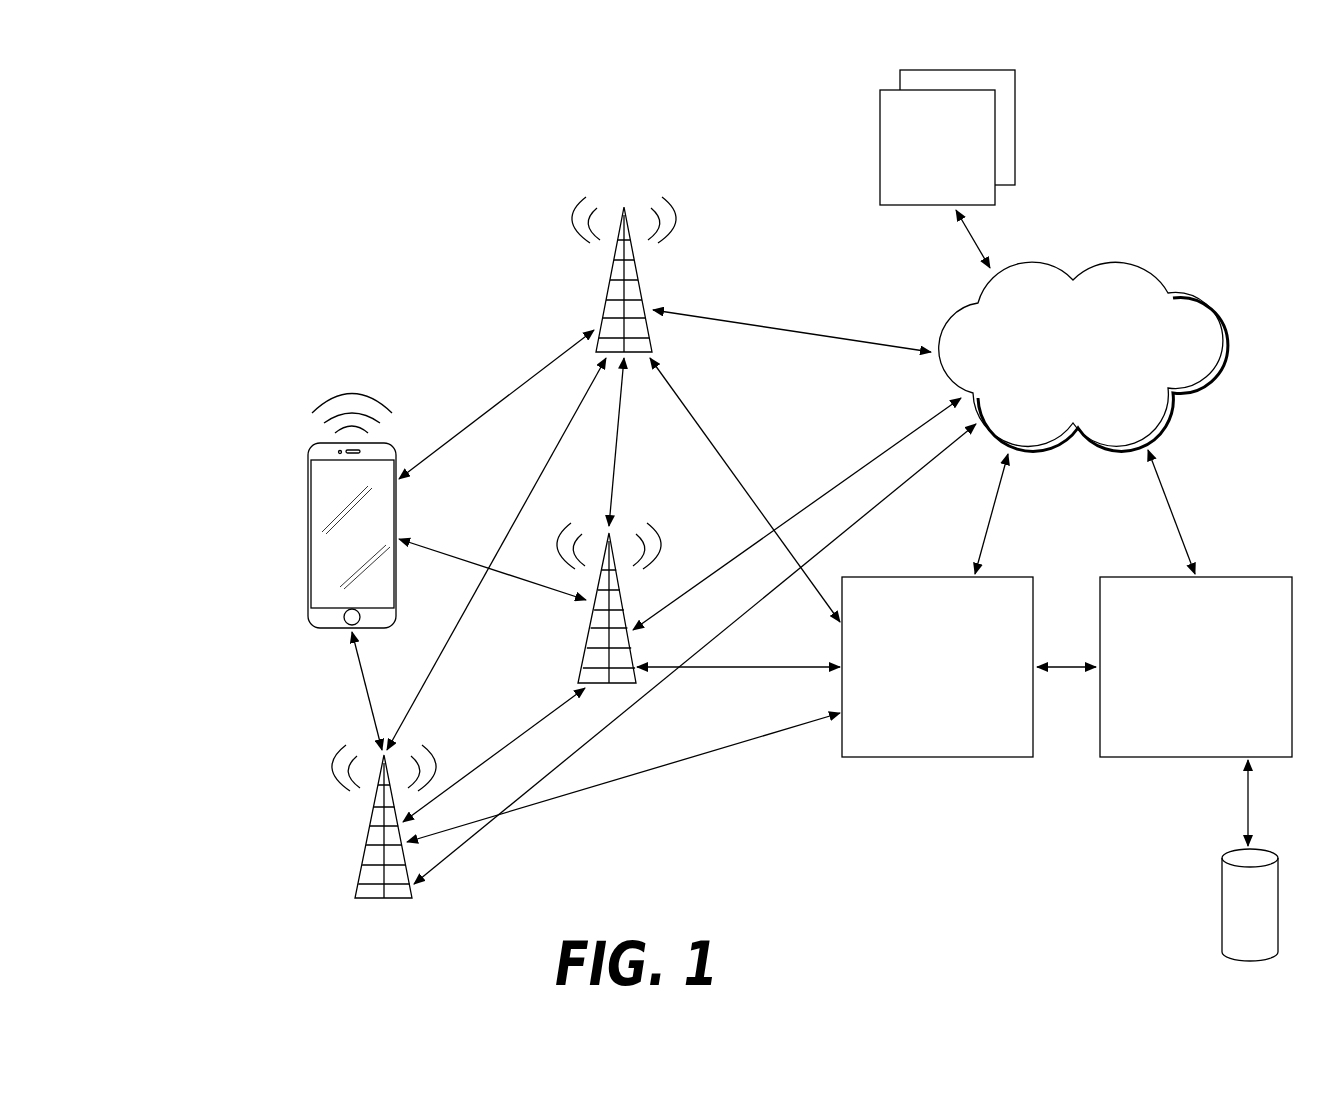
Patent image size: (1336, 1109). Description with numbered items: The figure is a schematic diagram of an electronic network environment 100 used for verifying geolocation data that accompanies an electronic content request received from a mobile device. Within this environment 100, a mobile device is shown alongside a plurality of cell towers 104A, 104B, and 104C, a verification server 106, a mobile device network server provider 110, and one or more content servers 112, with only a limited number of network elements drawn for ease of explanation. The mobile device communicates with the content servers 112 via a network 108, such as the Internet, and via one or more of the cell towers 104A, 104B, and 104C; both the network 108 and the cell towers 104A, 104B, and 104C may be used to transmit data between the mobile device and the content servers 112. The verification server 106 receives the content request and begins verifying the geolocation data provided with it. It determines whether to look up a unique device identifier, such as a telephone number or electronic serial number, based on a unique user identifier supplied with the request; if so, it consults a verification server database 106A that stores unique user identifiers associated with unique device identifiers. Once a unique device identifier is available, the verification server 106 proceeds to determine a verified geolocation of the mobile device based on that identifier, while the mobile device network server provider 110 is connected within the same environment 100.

The electronic network environment 100 is at (212, 245).
The cell tower 104A is at (651, 278).
The cell tower 104B is at (370, 830).
The cell tower 104C is at (592, 617).
The verification server 106 is at (1152, 758).
The verification server database 106A is at (1250, 905).
The network 108 is at (1118, 258).
The mobile device network server provider 110 is at (935, 758).
The content servers 112 is at (1015, 110).